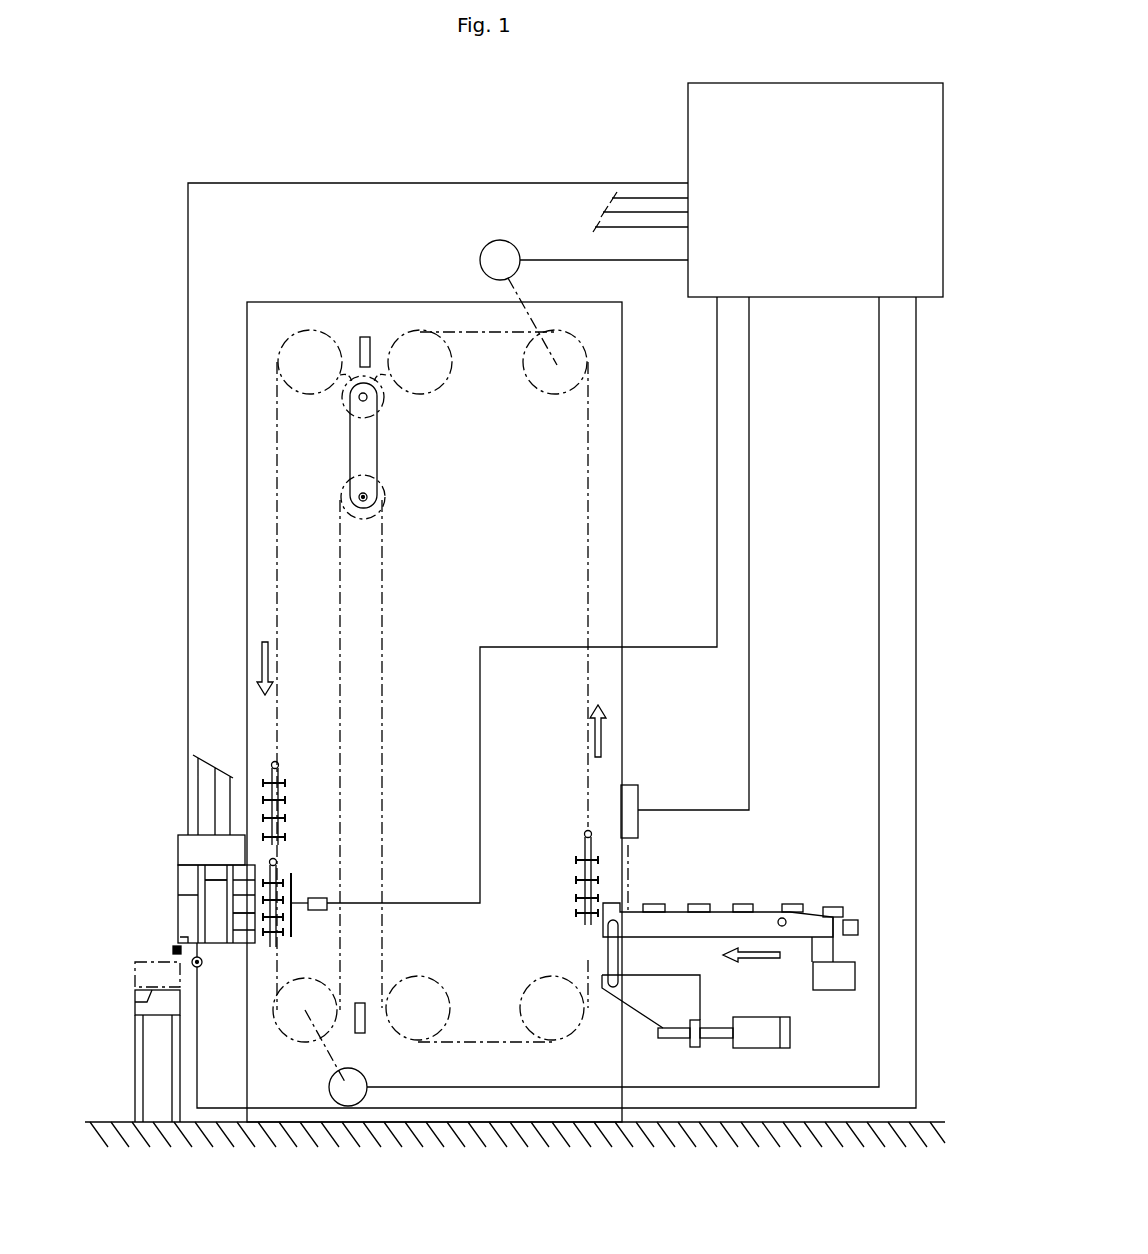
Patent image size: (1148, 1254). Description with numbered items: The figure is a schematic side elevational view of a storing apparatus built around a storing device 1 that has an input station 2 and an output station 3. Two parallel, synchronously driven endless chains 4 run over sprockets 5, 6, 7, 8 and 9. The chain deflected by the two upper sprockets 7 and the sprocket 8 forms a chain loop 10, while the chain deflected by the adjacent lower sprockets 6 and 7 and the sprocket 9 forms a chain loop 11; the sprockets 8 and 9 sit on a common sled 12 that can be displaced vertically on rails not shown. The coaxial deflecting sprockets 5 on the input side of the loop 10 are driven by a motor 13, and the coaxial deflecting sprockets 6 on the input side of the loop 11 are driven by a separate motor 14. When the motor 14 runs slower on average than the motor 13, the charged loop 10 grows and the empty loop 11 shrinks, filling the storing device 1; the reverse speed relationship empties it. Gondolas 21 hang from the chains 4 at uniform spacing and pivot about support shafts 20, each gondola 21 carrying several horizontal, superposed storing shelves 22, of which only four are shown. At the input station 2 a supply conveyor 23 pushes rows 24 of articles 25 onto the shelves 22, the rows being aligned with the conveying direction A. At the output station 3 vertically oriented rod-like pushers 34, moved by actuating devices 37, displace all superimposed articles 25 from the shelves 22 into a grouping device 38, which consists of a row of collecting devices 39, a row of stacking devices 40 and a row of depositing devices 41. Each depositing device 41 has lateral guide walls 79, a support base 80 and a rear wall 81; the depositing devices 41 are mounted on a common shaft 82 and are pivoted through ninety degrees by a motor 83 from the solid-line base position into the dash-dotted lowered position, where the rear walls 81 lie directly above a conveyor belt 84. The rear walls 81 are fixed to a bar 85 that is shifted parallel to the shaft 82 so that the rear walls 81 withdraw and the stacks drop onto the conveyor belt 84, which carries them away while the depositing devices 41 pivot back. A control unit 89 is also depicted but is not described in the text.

The storing device 1 is at (272, 283).
The input station 2 is at (657, 887).
The output station 3 is at (296, 845).
The endless chains 4 is at (585, 692).
The sprocket 5 is at (546, 393).
The sprocket 6 is at (288, 1036).
The sprocket 7 is at (309, 395).
The sprocket 8 is at (385, 407).
The sprocket 9 is at (388, 498).
The chain loop 10 is at (341, 418).
The chain loop 11 is at (334, 567).
The sled 12 is at (368, 455).
The motor 13 is at (481, 262).
The motor 14 is at (329, 1085).
The support shaft 20 is at (279, 765).
The gondola 21 is at (279, 777).
The storing shelf 22 is at (285, 803).
The supply conveyor 23 is at (766, 889).
The row of articles 24 is at (700, 901).
The article 25 is at (792, 908).
The pusher 34 is at (292, 885).
The actuating device 37 is at (322, 909).
The grouping device 38 is at (164, 768).
The collecting device 39 is at (242, 861).
The stacking device 40 is at (217, 861).
The depositing device 41 is at (189, 861).
The lateral guide wall 79 is at (190, 902).
The support base 80 is at (188, 940).
The rear wall 81 is at (178, 918).
The shaft 82 is at (203, 963).
The motor 83 is at (200, 967).
The conveyor belt 84 is at (147, 1003).
The bar 85 is at (173, 950).
The control unit 89 is at (700, 113).